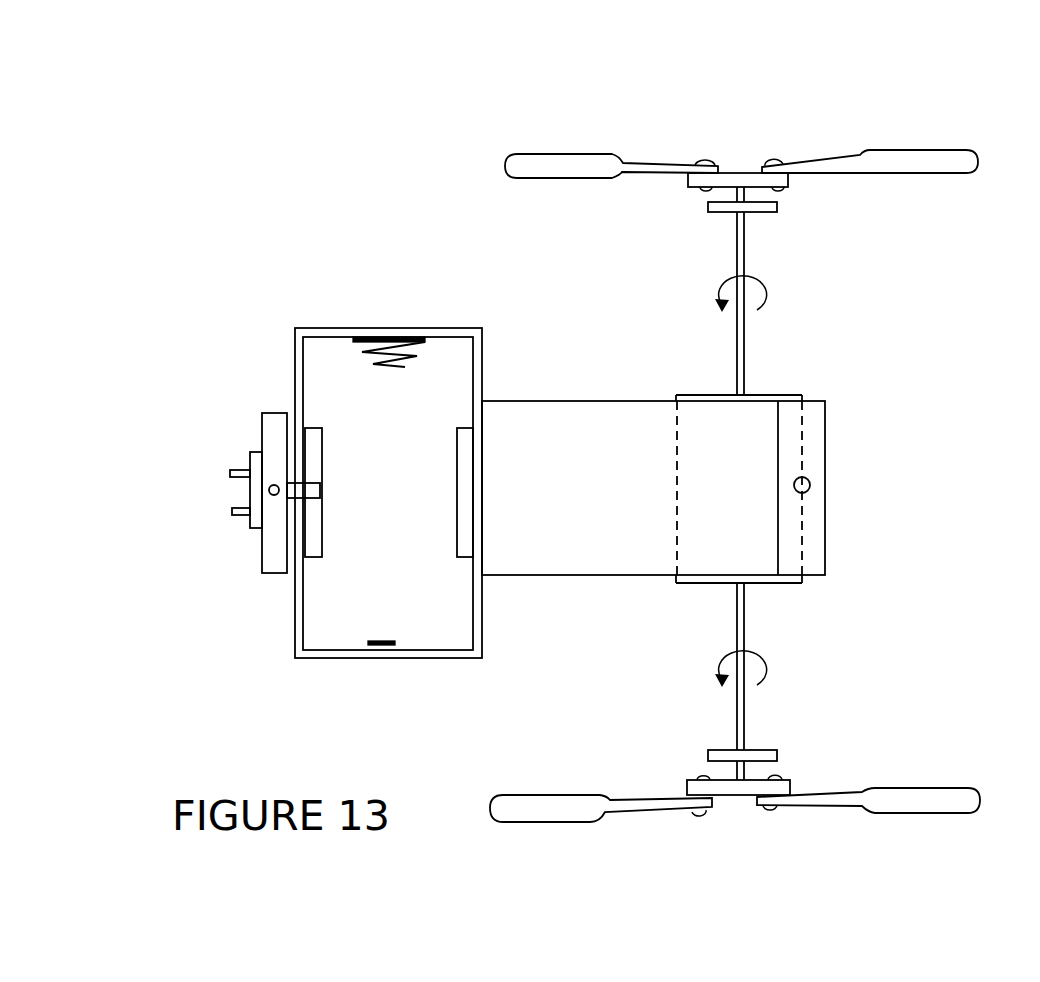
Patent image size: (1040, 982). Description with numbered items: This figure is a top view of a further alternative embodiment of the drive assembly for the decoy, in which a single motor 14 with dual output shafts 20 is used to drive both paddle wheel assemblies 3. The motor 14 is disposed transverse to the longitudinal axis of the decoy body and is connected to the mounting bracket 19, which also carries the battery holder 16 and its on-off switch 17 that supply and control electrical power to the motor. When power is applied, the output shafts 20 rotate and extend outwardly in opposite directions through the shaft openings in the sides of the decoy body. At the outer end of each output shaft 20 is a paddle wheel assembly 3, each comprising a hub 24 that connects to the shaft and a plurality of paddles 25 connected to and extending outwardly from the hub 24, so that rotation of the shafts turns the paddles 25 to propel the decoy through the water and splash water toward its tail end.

The paddle wheel assembly 3 is at (740, 479).
The motor 14 is at (787, 393).
The battery holder 16 is at (432, 330).
The on-off switch 17 is at (272, 427).
The mounting bracket 19 is at (600, 505).
The output shaft 20 is at (740, 357).
The hub 24 is at (738, 177).
The paddle 25 is at (527, 167).